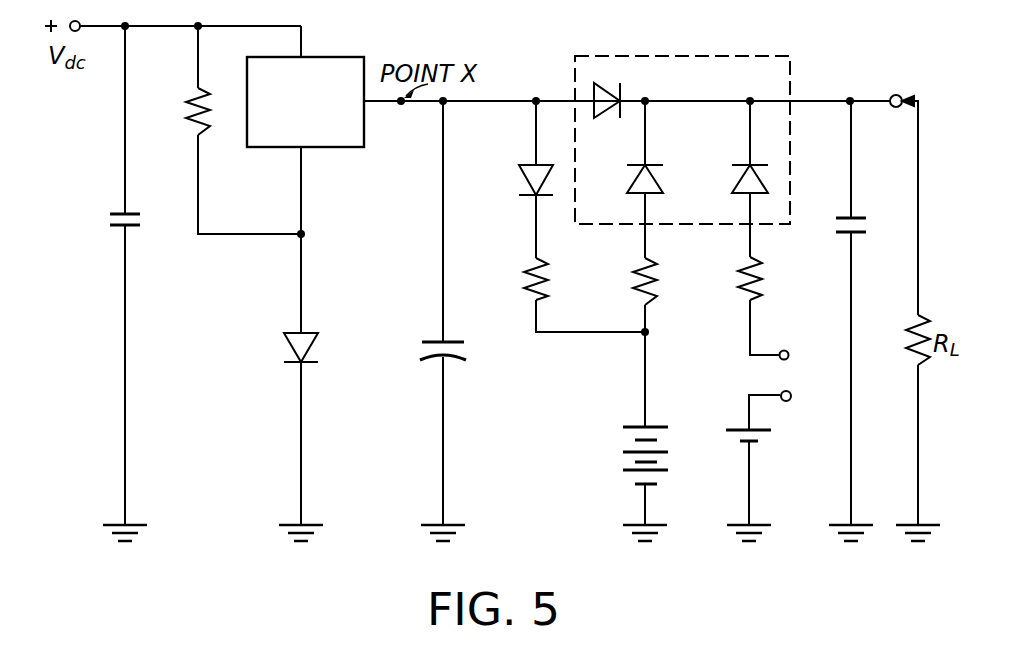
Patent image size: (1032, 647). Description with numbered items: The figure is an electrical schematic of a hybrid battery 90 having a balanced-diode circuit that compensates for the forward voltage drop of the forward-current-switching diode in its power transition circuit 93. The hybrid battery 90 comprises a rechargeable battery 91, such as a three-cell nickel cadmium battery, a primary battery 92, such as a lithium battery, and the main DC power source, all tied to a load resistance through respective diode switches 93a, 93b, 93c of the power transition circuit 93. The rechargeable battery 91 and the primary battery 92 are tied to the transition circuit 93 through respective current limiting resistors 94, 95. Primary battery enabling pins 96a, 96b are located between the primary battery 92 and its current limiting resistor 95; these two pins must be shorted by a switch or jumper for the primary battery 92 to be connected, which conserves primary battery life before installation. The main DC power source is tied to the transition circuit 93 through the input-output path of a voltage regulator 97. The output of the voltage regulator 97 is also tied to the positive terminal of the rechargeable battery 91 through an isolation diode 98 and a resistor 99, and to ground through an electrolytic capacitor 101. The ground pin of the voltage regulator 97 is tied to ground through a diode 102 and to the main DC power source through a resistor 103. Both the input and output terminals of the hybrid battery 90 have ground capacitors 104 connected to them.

The hybrid battery 90 is at (674, 40).
The rechargeable battery 91 is at (630, 470).
The primary battery 92 is at (750, 444).
The power transition circuit 93 is at (788, 58).
The diode switch 93a is at (628, 182).
The diode switch 93b is at (742, 182).
The diode switch 93c is at (622, 94).
The current limiting resistor 94 is at (650, 306).
The current limiting resistor 95 is at (754, 300).
The primary battery enabling pin 96a is at (812, 360).
The primary battery enabling pin 96b is at (790, 402).
The voltage regulator 97 is at (276, 148).
The isolation diode 98 is at (523, 172).
The resistor 99 is at (529, 263).
The electrolytic capacitor 101 is at (422, 343).
The diode 102 is at (290, 342).
The resistor 103 is at (196, 98).
The ground capacitor 104 is at (122, 230).